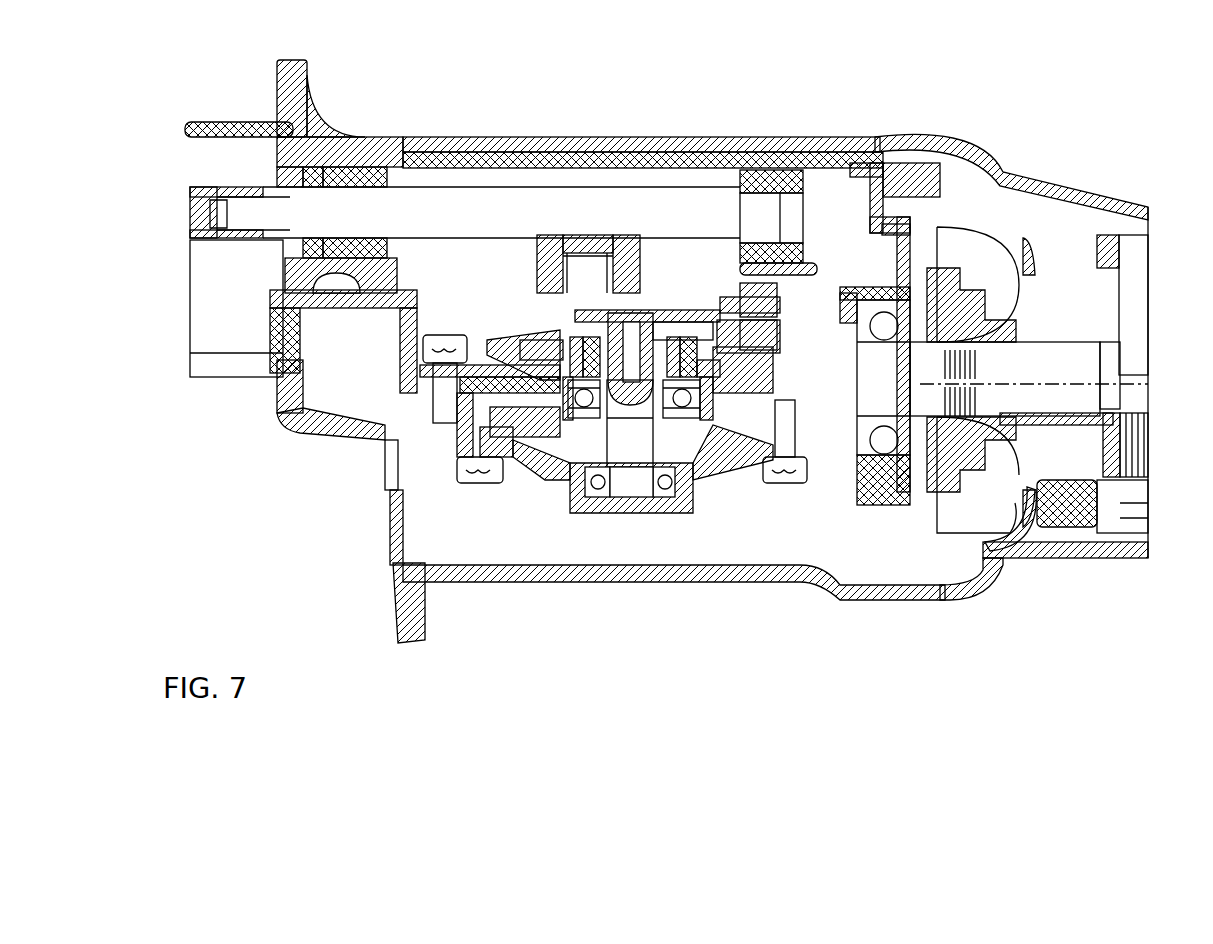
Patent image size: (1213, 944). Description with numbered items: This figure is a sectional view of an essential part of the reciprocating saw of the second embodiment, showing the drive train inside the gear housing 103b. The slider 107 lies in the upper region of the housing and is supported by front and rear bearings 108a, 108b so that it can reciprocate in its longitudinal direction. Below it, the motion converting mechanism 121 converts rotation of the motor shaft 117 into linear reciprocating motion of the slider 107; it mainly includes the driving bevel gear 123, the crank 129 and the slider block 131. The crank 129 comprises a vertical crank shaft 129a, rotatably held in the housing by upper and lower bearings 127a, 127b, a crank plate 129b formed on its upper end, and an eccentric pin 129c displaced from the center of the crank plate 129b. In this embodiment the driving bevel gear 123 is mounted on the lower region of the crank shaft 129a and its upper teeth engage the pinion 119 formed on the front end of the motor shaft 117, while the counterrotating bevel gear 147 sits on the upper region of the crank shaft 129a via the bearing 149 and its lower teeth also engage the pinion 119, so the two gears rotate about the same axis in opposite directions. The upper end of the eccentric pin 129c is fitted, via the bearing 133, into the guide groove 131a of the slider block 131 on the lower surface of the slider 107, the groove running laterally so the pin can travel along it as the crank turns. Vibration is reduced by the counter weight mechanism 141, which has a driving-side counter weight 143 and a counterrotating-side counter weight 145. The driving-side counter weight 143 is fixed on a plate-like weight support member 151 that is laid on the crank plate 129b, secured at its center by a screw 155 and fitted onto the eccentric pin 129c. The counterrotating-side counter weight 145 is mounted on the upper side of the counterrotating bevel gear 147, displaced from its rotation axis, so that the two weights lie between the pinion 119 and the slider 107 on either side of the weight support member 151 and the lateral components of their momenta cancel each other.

The gear housing 103b is at (218, 118).
The front bearing 108a is at (352, 175).
The bearing 133 is at (560, 330).
The slider block 131 is at (582, 270).
The screw 155 is at (650, 273).
The crank 129 is at (693, 310).
The rear bearing 108b is at (773, 170).
The counter weight mechanism 141 is at (782, 312).
The crank plate 129b is at (540, 320).
The eccentric pin 129c is at (572, 298).
The guide groove 131a is at (612, 233).
The weight support member 151 is at (678, 313).
The slider 107 is at (733, 200).
The driving-side counter weight 143 is at (815, 260).
The counterrotating-side counter weight 145 is at (777, 330).
The motion converting mechanism 121 is at (495, 315).
The counterrotating bevel gear 147 is at (540, 377).
The bearing 149 is at (525, 455).
The lower bearing 127b is at (560, 500).
The crank shaft 129a is at (627, 455).
The upper bearing 127a is at (683, 405).
The driving bevel gear 123 is at (728, 467).
The pinion 119 is at (785, 405).
The motor shaft 117 is at (878, 380).